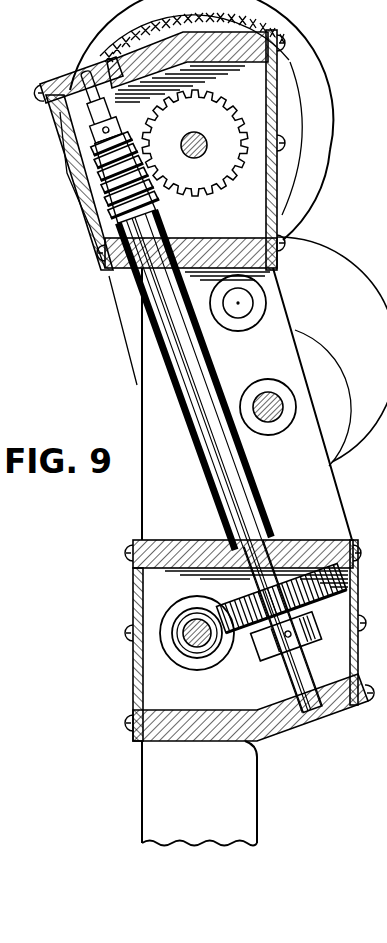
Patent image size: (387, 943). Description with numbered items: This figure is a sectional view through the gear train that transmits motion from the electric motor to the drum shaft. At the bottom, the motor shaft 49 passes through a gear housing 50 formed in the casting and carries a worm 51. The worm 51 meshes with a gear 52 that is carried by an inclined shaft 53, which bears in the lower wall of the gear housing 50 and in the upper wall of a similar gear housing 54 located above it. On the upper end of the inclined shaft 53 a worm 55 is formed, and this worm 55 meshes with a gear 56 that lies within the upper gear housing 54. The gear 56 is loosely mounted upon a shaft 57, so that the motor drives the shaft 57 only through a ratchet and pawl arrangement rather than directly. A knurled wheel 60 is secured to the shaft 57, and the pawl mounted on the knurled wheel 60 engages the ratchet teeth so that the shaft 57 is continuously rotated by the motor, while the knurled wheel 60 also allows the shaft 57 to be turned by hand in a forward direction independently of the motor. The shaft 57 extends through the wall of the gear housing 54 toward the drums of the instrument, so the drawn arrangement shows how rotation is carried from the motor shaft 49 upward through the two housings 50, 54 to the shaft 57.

The motor shaft 49 is at (195, 642).
The gear housing 50 is at (270, 693).
The worm 51 is at (220, 650).
The gear 52 is at (295, 614).
The inclined shaft 53 is at (240, 457).
The gear housing 54 is at (253, 197).
The worm 55 is at (93, 150).
The gear 56 is at (212, 182).
The shaft 57 is at (208, 152).
The knurled wheel 60 is at (293, 78).